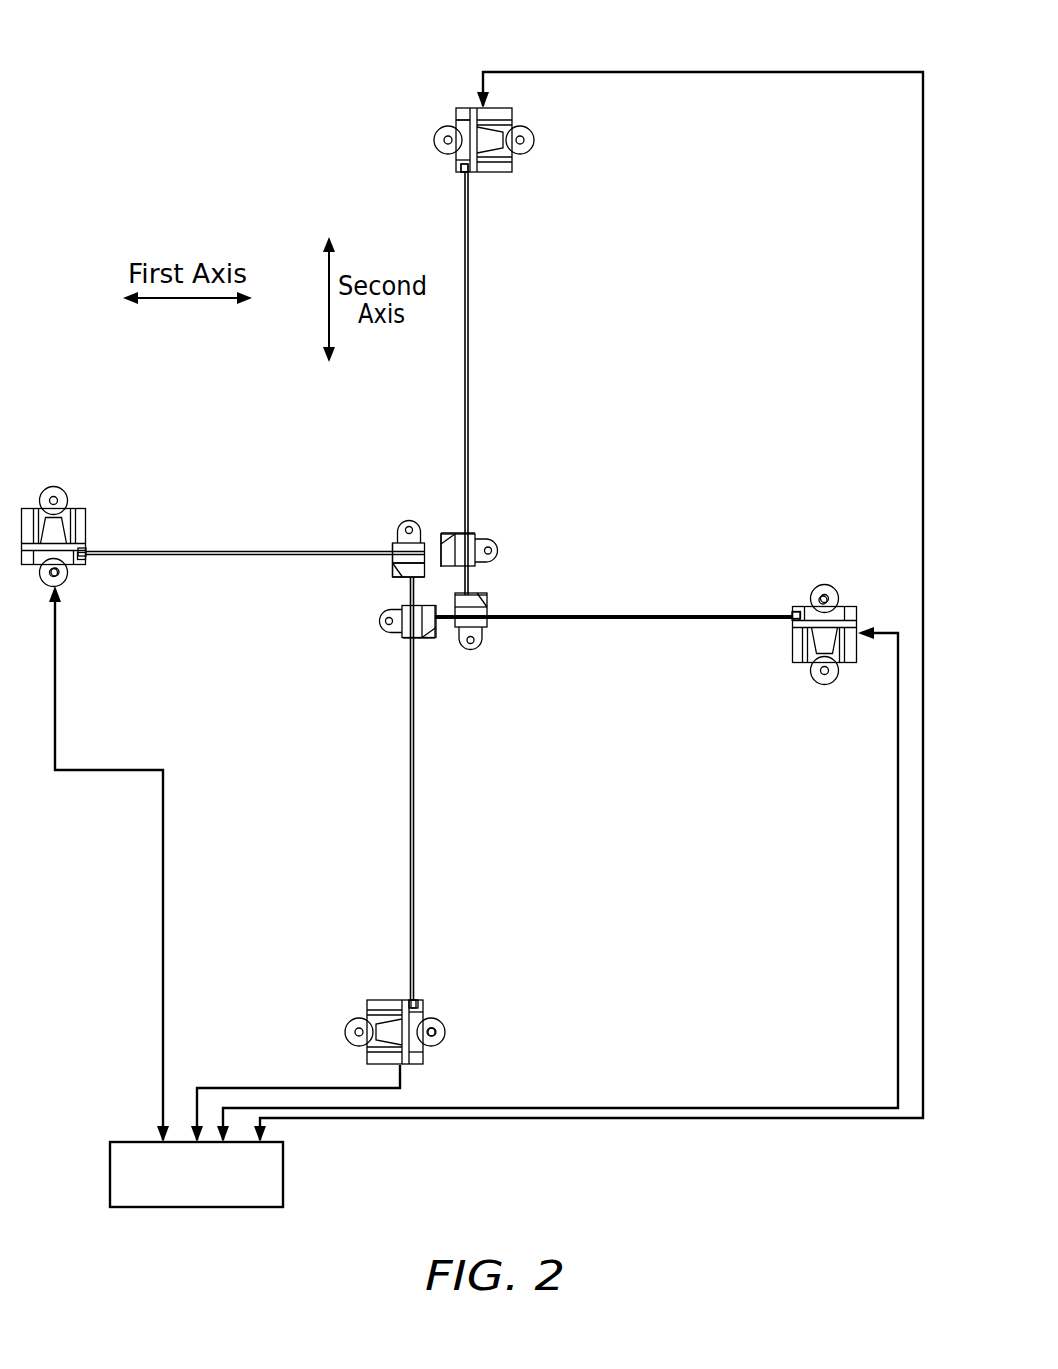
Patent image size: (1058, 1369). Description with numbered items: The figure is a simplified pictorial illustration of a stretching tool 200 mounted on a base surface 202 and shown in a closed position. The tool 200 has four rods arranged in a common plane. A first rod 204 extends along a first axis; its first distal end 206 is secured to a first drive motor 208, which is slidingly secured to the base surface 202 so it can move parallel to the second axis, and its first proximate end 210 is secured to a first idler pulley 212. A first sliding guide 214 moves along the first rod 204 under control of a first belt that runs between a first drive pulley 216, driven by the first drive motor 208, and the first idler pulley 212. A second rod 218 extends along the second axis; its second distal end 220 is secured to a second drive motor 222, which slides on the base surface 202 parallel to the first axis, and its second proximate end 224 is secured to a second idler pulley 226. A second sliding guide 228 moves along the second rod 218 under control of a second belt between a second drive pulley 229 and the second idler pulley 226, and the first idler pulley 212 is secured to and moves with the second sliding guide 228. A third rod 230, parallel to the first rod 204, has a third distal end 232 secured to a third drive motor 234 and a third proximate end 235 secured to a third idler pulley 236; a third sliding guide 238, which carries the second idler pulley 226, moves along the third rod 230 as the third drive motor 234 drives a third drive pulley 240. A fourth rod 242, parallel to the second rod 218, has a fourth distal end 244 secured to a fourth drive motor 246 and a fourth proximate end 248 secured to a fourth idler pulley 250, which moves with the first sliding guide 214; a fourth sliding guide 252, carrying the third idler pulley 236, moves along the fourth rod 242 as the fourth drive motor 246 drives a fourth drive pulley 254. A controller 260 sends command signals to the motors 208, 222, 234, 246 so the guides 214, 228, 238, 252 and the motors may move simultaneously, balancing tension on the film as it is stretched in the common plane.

The stretching tool 200 is at (188, 118).
The base surface 202 is at (667, 945).
The first rod 204 is at (232, 556).
The first distal end 206 is at (87, 560).
The first drive motor 208 is at (80, 505).
The first proximate end 210 is at (443, 548).
The first idler pulley 212 is at (444, 545).
The first sliding guide 214 is at (391, 548).
The first drive pulley 216 is at (68, 577).
The second rod 218 is at (469, 357).
The second distal end 220 is at (468, 172).
The second drive motor 222 is at (503, 170).
The second proximate end 224 is at (478, 566).
The second idler pulley 226 is at (470, 598).
The second sliding guide 228 is at (455, 548).
The second drive pulley 229 is at (458, 123).
The third rod 230 is at (668, 615).
The third distal end 232 is at (790, 620).
The third drive motor 234 is at (857, 617).
The third proximate end 235 is at (437, 620).
The third idler pulley 236 is at (428, 640).
The third sliding guide 238 is at (490, 606).
The third drive pulley 240 is at (820, 595).
The fourth rod 242 is at (408, 887).
The fourth distal end 244 is at (420, 1000).
The fourth drive motor 246 is at (425, 1060).
The fourth proximate end 248 is at (410, 590).
The fourth idler pulley 250 is at (410, 577).
The fourth sliding guide 252 is at (410, 640).
The fourth drive pulley 254 is at (433, 1030).
The controller 260 is at (283, 1178).